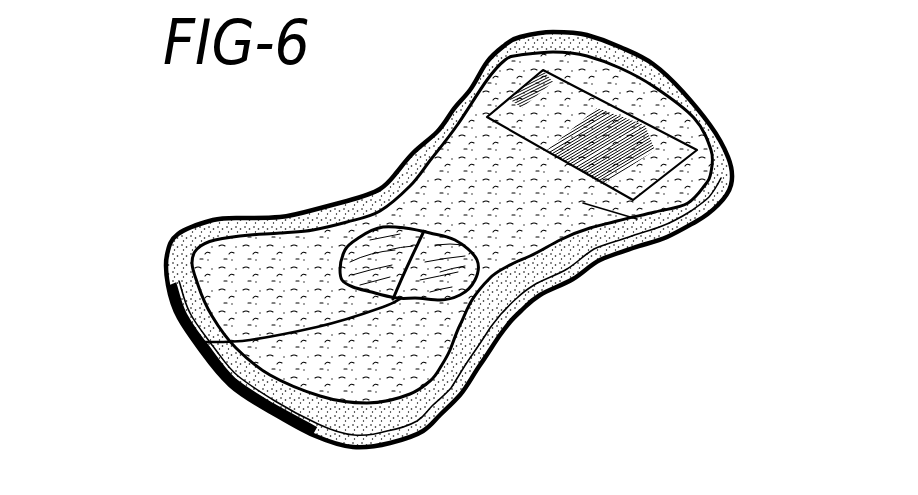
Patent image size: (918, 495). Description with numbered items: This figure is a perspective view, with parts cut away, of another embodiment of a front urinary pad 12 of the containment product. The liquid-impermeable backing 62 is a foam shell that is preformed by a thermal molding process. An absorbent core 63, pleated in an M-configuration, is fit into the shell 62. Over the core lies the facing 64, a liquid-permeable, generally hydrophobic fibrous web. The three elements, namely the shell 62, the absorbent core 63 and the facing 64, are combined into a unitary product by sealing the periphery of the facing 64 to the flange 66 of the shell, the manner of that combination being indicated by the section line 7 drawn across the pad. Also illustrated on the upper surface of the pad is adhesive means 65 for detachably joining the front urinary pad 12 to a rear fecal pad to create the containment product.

The urinary pad 12 is at (158, 174).
The liquid-impermeable backing 62 is at (497, 350).
The absorbent core 63 is at (197, 342).
The facing 64 is at (673, 233).
The adhesive means 65 is at (622, 132).
The flange 66 is at (182, 255).
The section line 7- 7 is at (382, 138).